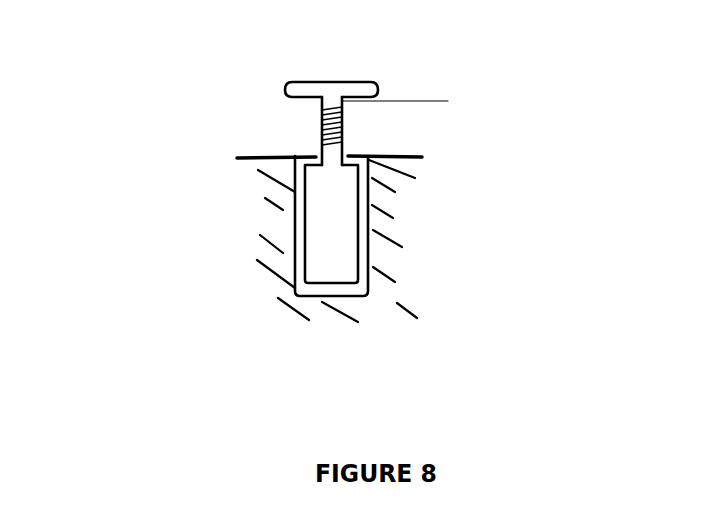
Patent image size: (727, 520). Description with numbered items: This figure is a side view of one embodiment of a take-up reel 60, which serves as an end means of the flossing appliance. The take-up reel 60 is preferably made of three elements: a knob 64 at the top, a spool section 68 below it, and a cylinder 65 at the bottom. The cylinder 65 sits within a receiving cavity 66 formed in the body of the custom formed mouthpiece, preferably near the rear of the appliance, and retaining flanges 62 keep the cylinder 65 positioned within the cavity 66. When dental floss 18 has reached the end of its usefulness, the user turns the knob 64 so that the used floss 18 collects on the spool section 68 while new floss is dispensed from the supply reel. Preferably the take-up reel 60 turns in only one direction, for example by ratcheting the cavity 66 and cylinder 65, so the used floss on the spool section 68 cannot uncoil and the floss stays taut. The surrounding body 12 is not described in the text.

The take-up reel 60 is at (207, 79).
The knob 64 is at (297, 82).
The spool section 68 is at (342, 116).
The retaining flanges 62 is at (313, 148).
The dental floss 18 is at (403, 103).
The receiving cavity 66 is at (367, 226).
The cylinder 65 is at (330, 215).
The substrate 12 is at (395, 305).